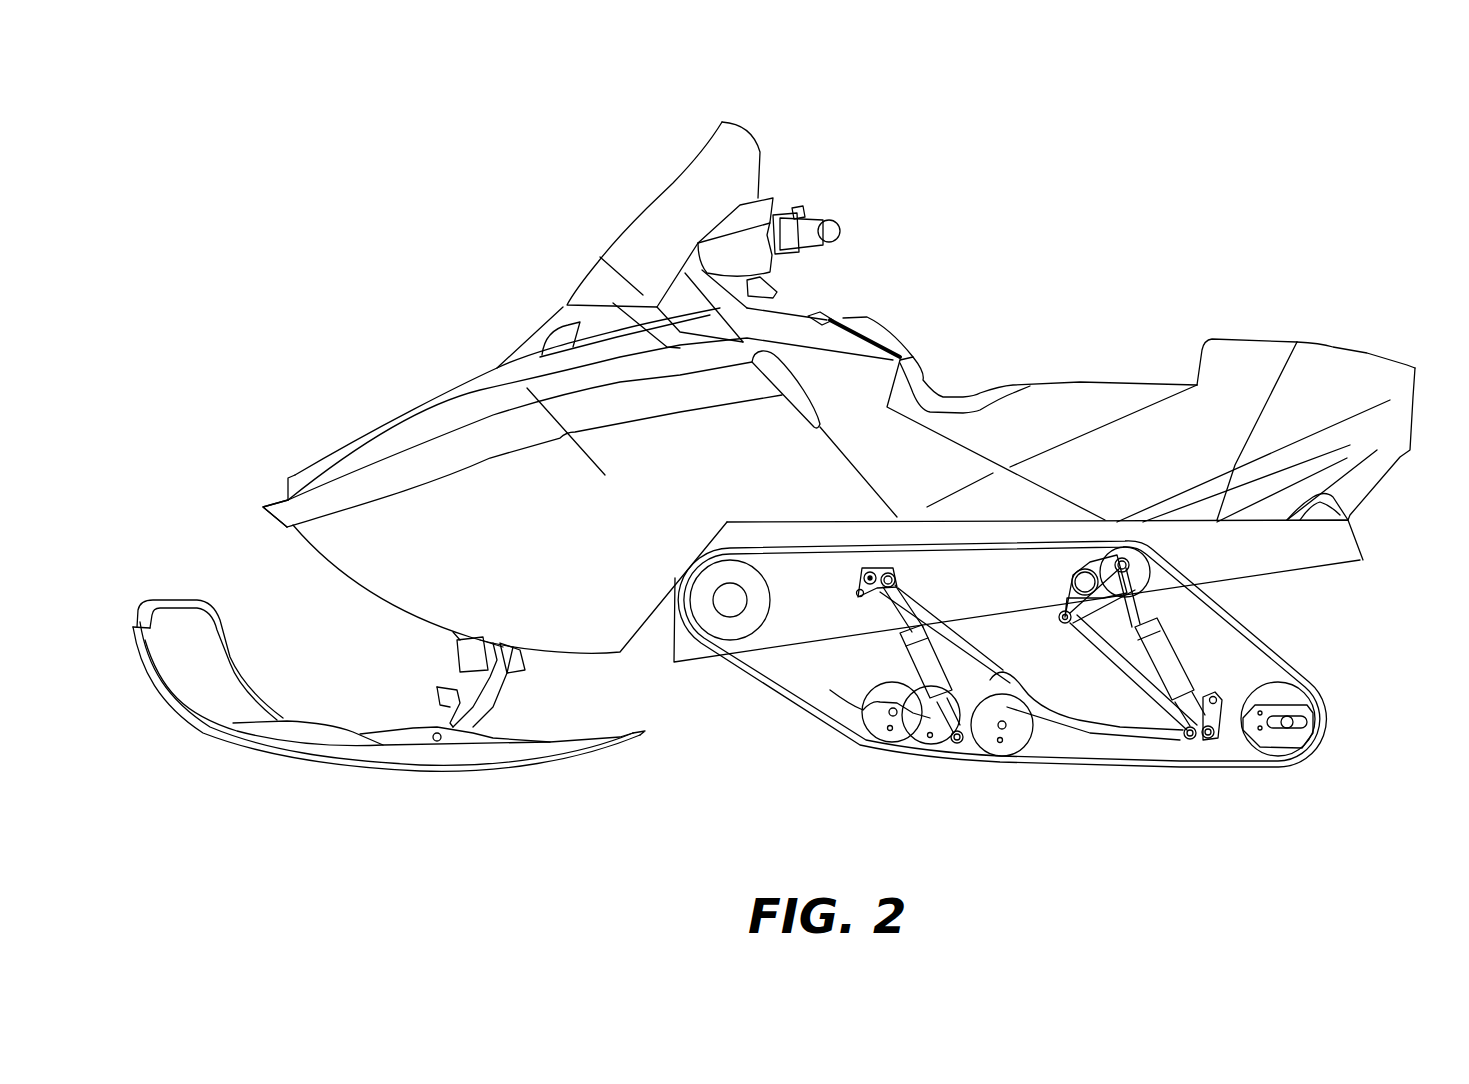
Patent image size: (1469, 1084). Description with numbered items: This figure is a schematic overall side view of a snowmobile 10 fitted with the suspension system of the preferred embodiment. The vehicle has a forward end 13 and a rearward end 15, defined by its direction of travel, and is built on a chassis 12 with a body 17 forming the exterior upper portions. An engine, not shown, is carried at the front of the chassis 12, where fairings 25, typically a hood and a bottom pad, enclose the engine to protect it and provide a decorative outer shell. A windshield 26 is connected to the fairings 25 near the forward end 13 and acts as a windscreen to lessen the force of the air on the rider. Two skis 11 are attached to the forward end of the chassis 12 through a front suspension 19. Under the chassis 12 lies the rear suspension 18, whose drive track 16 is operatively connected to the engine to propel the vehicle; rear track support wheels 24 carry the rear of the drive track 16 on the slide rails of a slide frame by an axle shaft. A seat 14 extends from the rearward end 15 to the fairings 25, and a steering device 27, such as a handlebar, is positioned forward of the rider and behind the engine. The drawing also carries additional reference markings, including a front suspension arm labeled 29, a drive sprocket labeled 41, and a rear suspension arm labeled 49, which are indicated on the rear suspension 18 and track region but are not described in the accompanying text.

The snowmobile 10 is at (416, 281).
The skis 11 is at (504, 760).
The chassis 12 is at (1337, 546).
The forward end 13 is at (262, 503).
The seat 14 is at (1227, 337).
The rearward end 15 is at (1413, 400).
The drive track 16 is at (1268, 642).
The body 17 is at (1338, 350).
The rear suspension 18 is at (753, 723).
The front suspension 19 is at (432, 700).
The rear track support wheels 24 is at (1297, 750).
The fairings 25 is at (390, 430).
The windshield 26 is at (720, 167).
The steering device 27 is at (800, 215).
The front suspension arm 29 is at (860, 674).
The drive sprocket 41 is at (712, 632).
The rear suspension arm 49 is at (1108, 698).